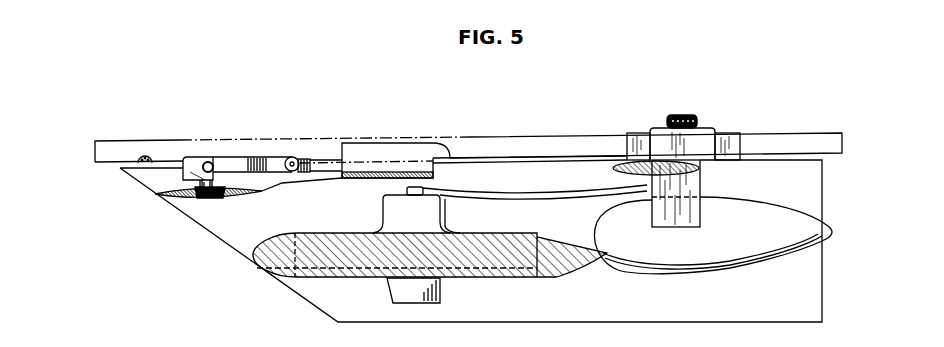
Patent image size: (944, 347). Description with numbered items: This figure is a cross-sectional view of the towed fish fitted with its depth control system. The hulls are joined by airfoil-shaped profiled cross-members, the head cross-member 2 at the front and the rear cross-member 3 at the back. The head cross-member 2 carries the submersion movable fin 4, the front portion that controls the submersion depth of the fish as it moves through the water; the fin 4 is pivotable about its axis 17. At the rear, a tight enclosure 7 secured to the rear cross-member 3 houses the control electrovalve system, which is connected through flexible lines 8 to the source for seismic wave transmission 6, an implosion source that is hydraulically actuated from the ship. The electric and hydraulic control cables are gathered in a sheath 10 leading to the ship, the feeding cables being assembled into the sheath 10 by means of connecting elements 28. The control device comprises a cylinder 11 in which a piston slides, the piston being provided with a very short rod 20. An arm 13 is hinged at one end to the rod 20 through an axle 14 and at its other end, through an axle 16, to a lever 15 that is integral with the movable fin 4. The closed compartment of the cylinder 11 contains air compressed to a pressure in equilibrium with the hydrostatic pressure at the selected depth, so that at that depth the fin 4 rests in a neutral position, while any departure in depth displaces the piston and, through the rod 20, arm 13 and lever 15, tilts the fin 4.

The head cross-member 2 is at (170, 191).
The rear cross-member 3 is at (640, 167).
The submersion movable fin 4 is at (217, 197).
The source for seismic wave transmission 6 is at (300, 270).
The tight enclosure 7 is at (755, 225).
The flexible lines 8 is at (458, 192).
The sheath 10 is at (513, 145).
The cylinder 11 is at (383, 153).
The arm 13 is at (248, 160).
The axle 14 is at (294, 158).
The lever 15 is at (195, 178).
The axle 16 is at (208, 162).
The axis 17 is at (202, 200).
The rod 20 is at (325, 162).
The connecting elements 28 is at (698, 137).